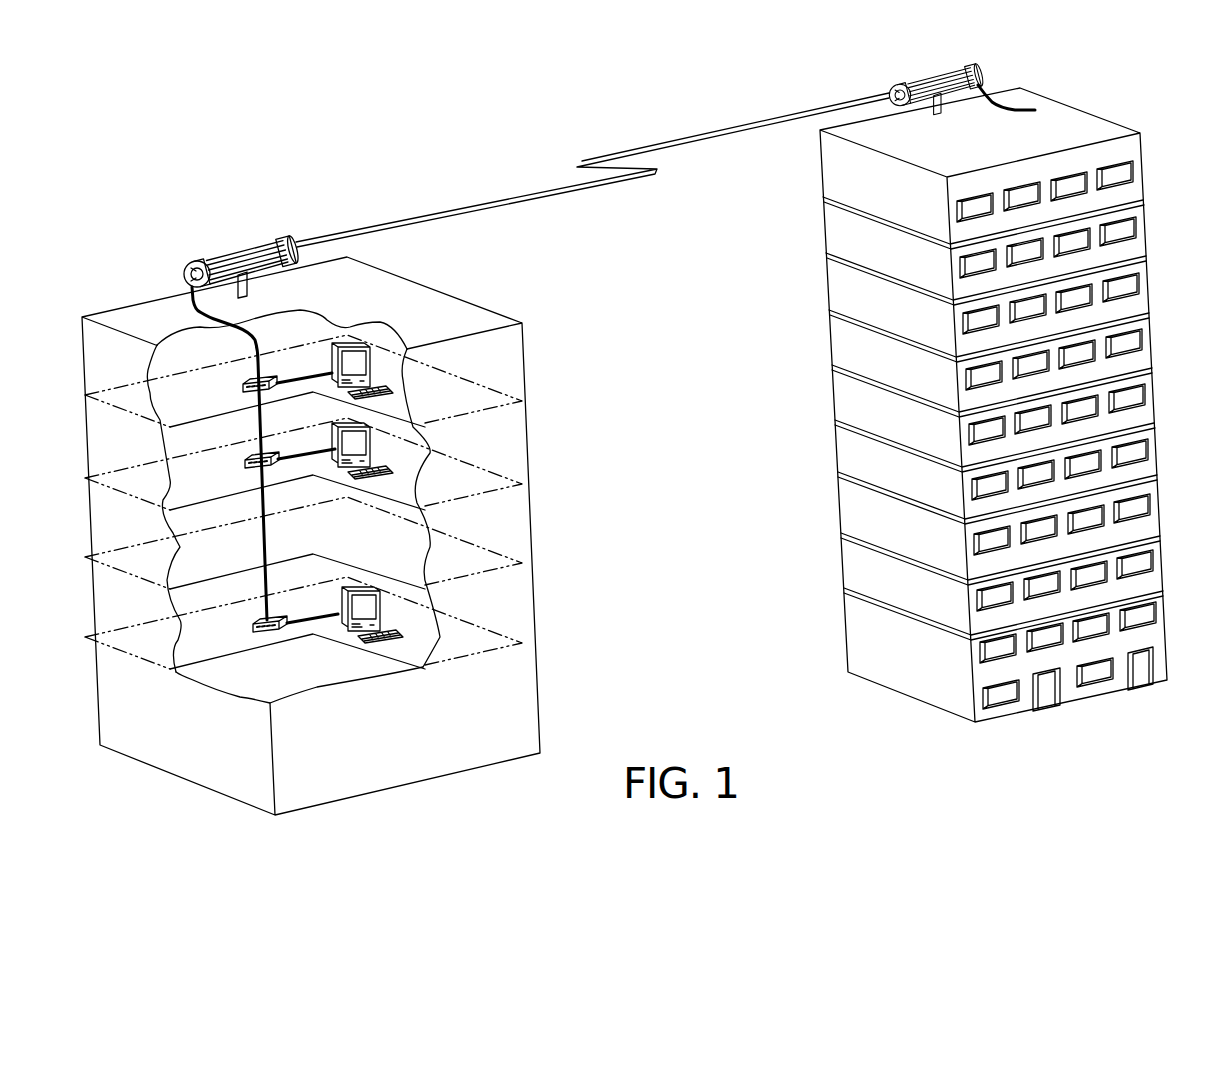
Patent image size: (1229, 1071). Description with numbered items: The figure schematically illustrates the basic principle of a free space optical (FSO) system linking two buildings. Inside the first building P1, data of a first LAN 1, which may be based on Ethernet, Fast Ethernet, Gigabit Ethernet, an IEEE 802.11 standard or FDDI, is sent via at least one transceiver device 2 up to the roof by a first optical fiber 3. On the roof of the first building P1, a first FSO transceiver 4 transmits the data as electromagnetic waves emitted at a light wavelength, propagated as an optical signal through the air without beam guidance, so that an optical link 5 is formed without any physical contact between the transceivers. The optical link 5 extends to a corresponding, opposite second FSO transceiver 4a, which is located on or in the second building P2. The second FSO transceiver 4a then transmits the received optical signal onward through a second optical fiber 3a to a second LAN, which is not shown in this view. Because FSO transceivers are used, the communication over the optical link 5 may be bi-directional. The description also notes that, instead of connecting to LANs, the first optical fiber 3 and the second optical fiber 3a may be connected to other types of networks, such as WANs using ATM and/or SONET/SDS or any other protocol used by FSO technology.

The first LAN 1 is at (372, 604).
The transceiver device 2 is at (283, 625).
The first optical fiber 3 is at (196, 311).
The first FSO transceiver 4 is at (200, 264).
The optical link 5 is at (572, 190).
The second optical fiber 3a is at (1033, 112).
The second FSO transceiver 4a is at (982, 77).
The first building P1 is at (575, 592).
The second building P2 is at (1107, 728).